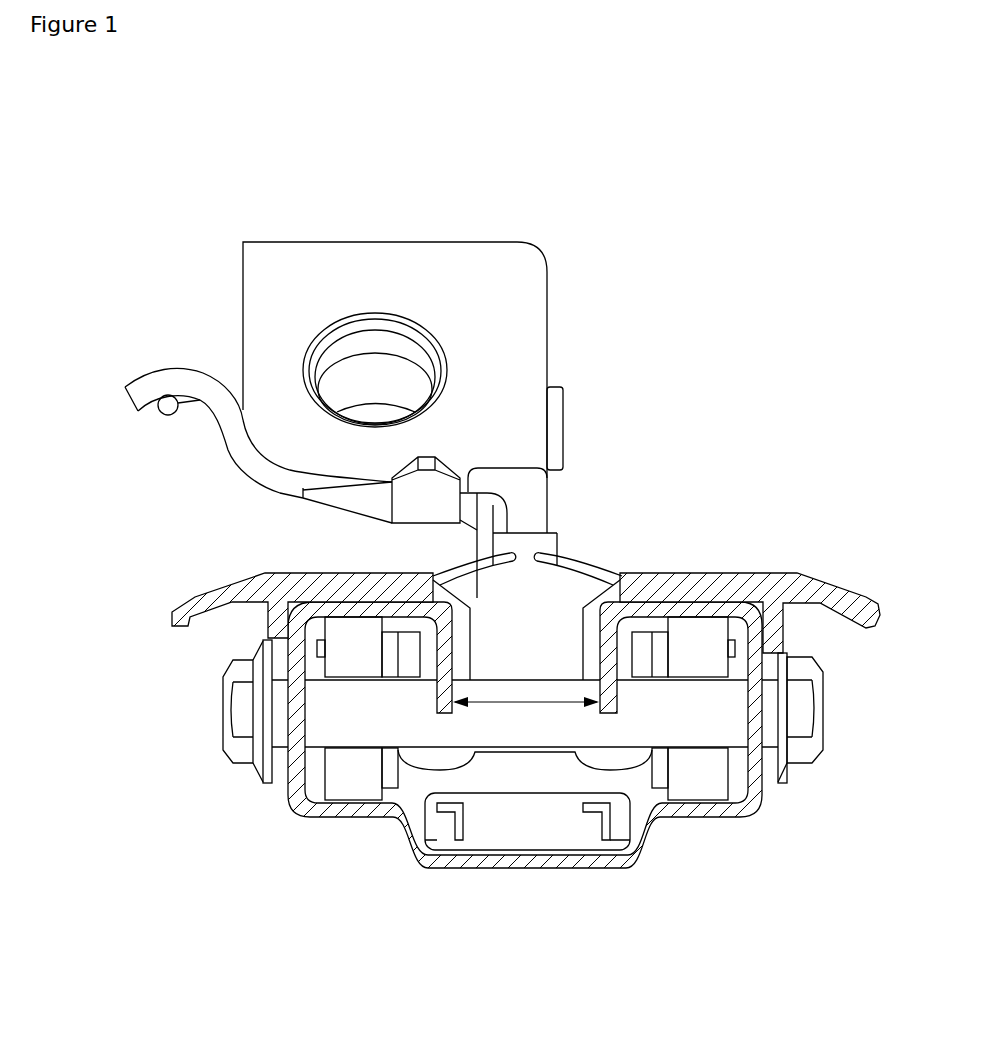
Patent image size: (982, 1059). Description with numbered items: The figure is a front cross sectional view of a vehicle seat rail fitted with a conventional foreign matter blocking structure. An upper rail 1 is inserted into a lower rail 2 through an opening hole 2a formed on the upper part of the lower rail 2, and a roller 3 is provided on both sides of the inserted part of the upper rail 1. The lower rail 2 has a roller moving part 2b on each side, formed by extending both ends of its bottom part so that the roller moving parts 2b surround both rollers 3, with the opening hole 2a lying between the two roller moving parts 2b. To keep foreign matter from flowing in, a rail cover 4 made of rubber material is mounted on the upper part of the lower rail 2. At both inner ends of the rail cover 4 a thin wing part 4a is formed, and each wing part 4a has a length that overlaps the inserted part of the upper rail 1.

The upper rail 1 is at (470, 222).
The lower rail 2 is at (622, 880).
The opening hole 2a is at (527, 704).
The roller moving part 2b is at (297, 720).
The roller 3 is at (348, 773).
The rail cover 4 is at (714, 588).
The wing part 4a is at (567, 555).